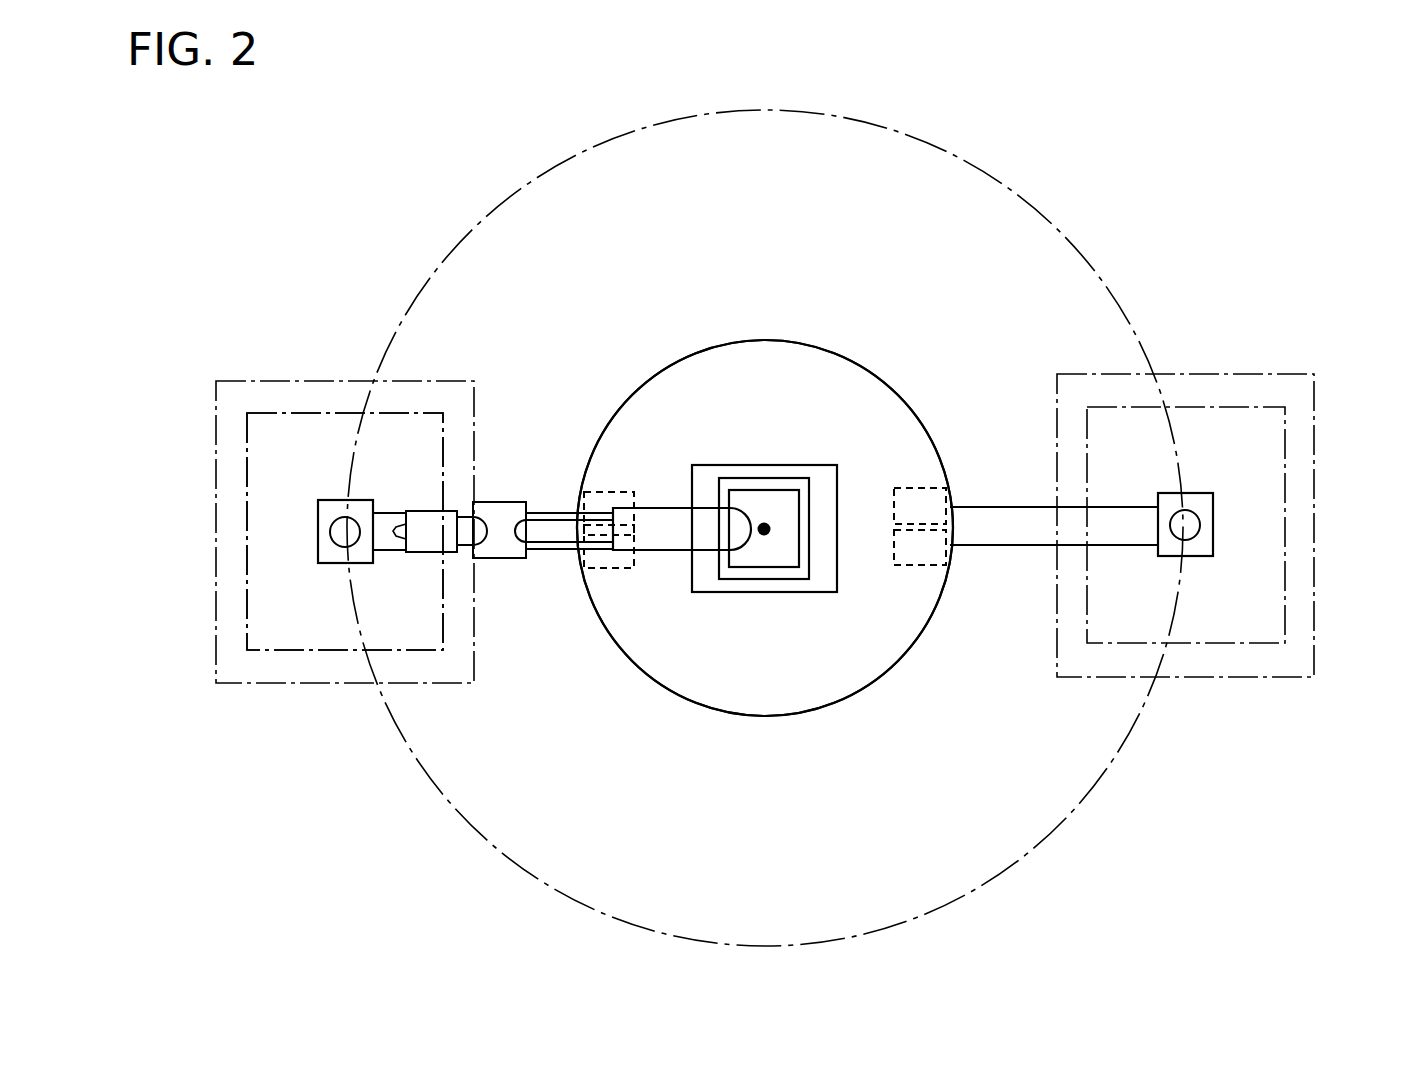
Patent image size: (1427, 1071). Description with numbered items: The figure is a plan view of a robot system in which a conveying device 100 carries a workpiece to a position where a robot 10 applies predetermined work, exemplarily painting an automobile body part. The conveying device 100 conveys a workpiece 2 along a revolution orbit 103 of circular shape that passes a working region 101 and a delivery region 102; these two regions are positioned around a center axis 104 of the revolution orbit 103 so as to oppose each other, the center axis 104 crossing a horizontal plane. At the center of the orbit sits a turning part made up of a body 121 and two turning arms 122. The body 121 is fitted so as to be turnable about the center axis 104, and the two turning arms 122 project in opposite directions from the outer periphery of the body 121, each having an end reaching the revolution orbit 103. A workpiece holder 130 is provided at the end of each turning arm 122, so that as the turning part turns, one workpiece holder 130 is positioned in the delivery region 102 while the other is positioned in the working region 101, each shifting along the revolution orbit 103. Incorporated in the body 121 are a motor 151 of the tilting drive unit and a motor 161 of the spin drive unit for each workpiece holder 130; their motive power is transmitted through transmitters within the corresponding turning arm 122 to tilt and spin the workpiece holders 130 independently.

The conveying device 100 is at (685, 335).
The revolution orbit 103 is at (1090, 259).
The center axis 104 is at (766, 522).
The working region 101 is at (295, 381).
The delivery region 102 is at (1232, 374).
The motor 161 is at (612, 488).
The motor 151 is at (915, 488).
The workpiece 2 is at (244, 504).
The workpiece holder 130 is at (299, 553).
The turning arm 122 is at (386, 540).
The robot 10 is at (665, 560).
The body 121 is at (765, 699).